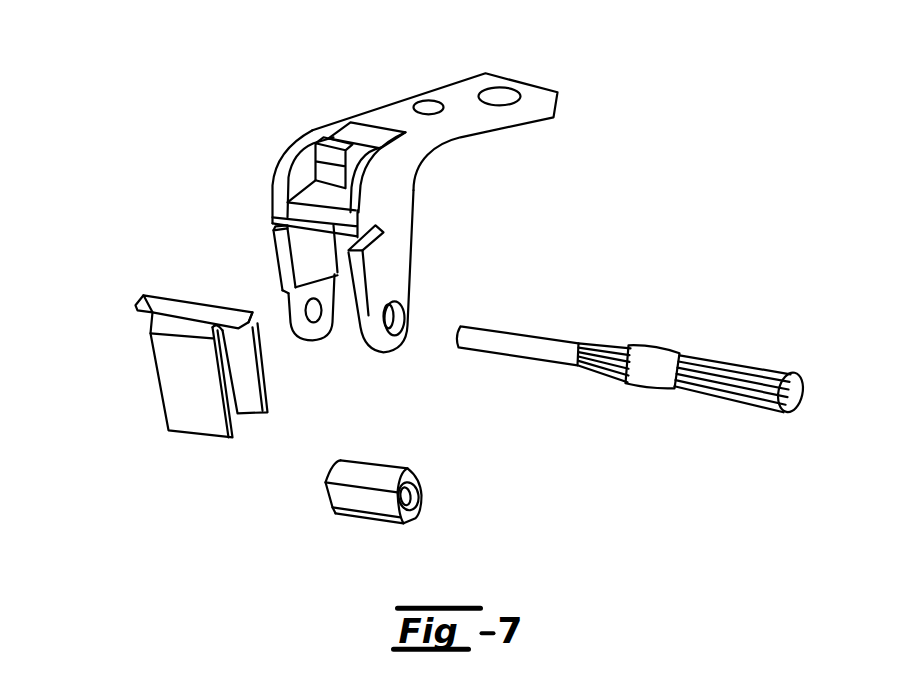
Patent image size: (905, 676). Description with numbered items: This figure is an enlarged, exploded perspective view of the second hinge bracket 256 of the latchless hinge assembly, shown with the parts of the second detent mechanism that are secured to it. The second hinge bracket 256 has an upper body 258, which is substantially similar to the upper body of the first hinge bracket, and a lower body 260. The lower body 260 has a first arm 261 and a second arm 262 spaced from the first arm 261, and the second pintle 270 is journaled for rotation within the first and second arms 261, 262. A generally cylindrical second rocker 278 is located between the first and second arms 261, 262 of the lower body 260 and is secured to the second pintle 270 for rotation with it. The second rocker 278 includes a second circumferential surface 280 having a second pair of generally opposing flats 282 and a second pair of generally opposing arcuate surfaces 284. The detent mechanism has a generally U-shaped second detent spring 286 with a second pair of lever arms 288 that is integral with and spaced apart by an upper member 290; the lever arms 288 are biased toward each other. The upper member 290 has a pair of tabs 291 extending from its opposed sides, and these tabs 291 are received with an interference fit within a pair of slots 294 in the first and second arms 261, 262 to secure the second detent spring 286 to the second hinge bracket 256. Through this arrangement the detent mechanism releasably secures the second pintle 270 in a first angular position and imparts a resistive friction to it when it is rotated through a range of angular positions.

The second hinge bracket 256 is at (355, 188).
The upper body 258 is at (470, 138).
The lower body 260 is at (272, 190).
The first arm 261 is at (273, 252).
The second arm 262 is at (400, 272).
The slots 294 is at (273, 229).
The second pintle 270 is at (697, 328).
The second rocker 278 is at (367, 495).
The second circumferential surface 280 is at (417, 467).
The second pair of generally opposing flats 282 is at (430, 497).
The second pair of generally opposing arcuate surfaces 284 is at (357, 467).
The second detent spring 286 is at (191, 356).
The second pair of lever arms 288 is at (178, 428).
The upper member 290 is at (175, 303).
The tabs 291 is at (135, 305).